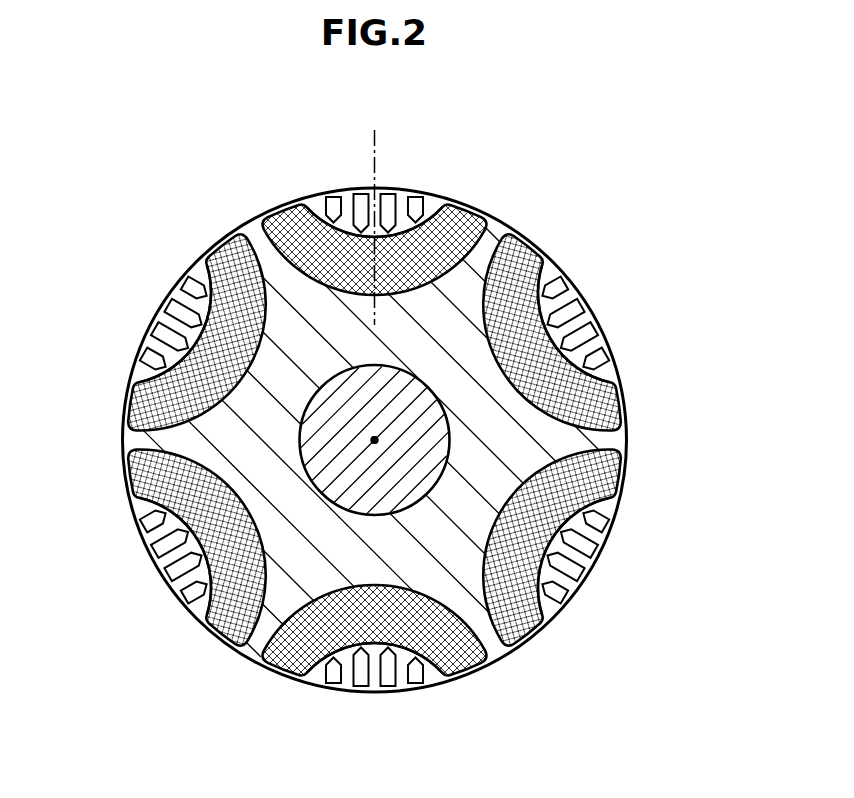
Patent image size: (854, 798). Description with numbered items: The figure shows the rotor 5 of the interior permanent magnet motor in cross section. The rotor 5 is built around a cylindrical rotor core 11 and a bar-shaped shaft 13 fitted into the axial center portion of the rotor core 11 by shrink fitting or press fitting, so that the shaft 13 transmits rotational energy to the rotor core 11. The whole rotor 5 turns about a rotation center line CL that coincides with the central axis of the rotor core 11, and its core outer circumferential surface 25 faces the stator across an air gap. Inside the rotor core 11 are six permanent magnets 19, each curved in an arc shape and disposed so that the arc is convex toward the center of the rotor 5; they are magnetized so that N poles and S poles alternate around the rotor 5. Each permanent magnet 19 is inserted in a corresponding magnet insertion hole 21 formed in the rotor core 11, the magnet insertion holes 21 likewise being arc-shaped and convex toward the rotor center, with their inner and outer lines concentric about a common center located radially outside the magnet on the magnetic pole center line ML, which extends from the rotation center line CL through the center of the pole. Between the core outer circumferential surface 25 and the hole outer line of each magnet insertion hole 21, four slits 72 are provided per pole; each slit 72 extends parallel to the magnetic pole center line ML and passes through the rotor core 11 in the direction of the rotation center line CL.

The rotor 5 is at (63, 203).
The rotor core 11 is at (283, 325).
The shaft 13 is at (410, 473).
The permanent magnet 19 is at (531, 239).
The magnet insertion hole 21 is at (602, 397).
The core outer circumferential surface 25 is at (492, 663).
The slits 72 is at (417, 200).
The magnetic pole center line ML is at (373, 162).
The rotation center line CL is at (374, 440).